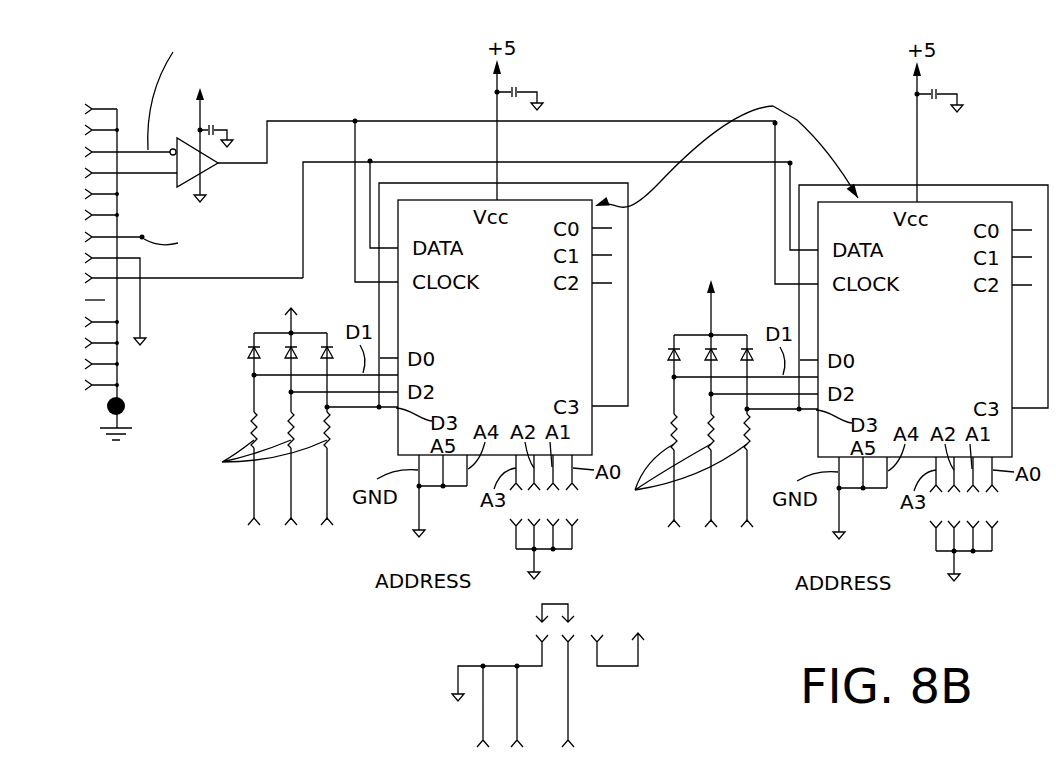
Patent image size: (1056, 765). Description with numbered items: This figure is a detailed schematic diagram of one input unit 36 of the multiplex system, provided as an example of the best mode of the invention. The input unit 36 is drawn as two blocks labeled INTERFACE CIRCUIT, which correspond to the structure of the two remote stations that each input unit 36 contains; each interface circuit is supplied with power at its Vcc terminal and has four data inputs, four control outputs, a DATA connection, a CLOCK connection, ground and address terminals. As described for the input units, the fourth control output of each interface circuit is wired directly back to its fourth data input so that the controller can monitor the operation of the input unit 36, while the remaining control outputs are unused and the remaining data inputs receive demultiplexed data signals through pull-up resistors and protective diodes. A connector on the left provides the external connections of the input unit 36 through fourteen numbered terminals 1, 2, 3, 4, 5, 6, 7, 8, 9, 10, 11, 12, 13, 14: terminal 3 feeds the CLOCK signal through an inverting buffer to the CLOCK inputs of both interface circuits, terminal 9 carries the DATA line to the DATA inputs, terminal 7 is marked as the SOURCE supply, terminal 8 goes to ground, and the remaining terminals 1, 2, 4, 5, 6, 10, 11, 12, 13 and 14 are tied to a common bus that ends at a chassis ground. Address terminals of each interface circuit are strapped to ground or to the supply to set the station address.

The input unit 36 is at (290, 643).
The connector J1 pin 1 is at (91, 109).
The connector J1 pin 2 is at (92, 130).
The connector J1 pin 3 is at (117, 151).
The connector J1 pin 4 is at (121, 173).
The connector J1 pin 5 is at (92, 194).
The connector J1 pin 6 is at (92, 215).
The connector J1 pin 7 is at (103, 236).
The connector J1 pin 8 is at (102, 292).
The connector J1 pin 9 is at (184, 279).
The connector J1 pin 10 is at (79, 300).
The connector J1 pin 11 is at (86, 321).
The connector J1 pin 12 is at (86, 343).
The connector J1 pin 13 is at (86, 364).
The connector J1 pin 14 is at (86, 385).